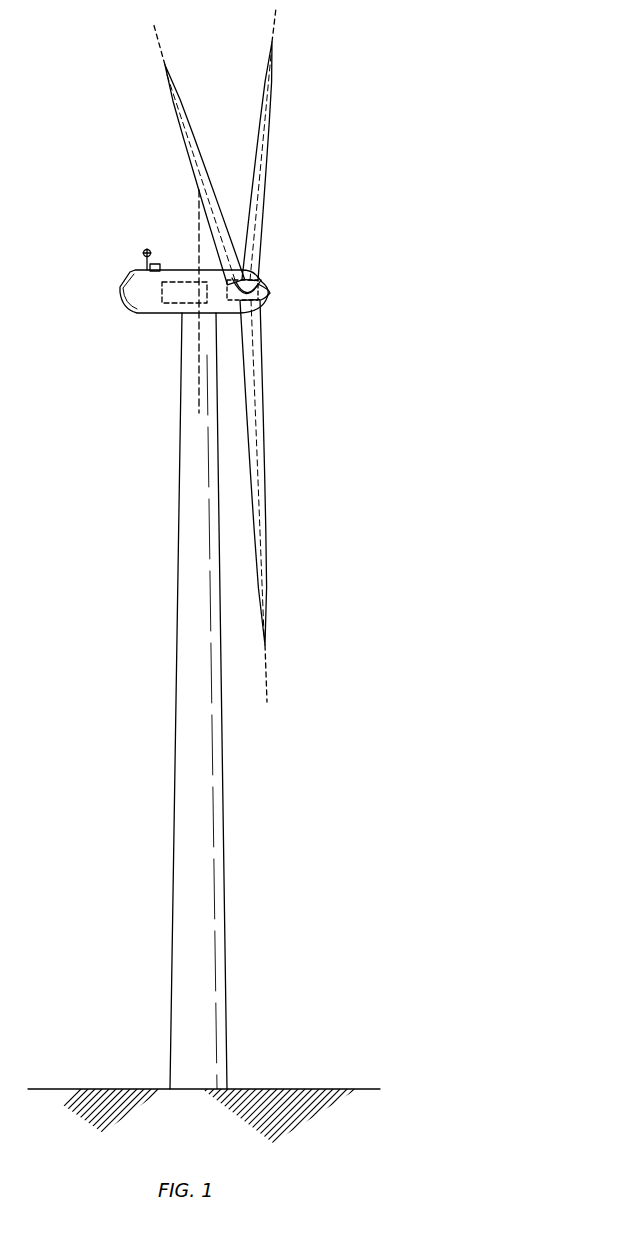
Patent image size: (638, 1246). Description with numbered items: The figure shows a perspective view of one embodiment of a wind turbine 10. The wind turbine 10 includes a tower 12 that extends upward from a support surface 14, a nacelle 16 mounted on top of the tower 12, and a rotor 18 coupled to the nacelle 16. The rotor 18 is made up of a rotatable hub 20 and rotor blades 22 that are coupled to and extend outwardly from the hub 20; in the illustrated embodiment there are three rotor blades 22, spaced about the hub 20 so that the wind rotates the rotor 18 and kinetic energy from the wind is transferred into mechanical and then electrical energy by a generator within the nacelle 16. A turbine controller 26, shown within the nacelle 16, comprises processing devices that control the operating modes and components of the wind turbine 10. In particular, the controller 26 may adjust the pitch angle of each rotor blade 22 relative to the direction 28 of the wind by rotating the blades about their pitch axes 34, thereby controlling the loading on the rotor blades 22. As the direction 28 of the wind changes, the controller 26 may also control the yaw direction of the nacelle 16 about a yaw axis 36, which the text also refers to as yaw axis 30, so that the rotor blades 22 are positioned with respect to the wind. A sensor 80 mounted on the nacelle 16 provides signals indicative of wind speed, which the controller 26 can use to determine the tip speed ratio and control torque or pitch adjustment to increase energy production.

The wind turbine 10 is at (362, 118).
The tower 12 is at (186, 806).
The support surface 14 is at (99, 1088).
The nacelle 16 is at (160, 314).
The rotor 18 is at (278, 262).
The rotatable hub 20 is at (266, 297).
The rotor blade 22 is at (250, 152).
The turbine controller 26 is at (178, 270).
The direction of the wind 28 is at (362, 281).
The yaw axis 30 is at (268, 293).
The pitch axis 34 is at (160, 52).
The yaw axis 36 is at (195, 368).
The sensor 80 is at (143, 253).